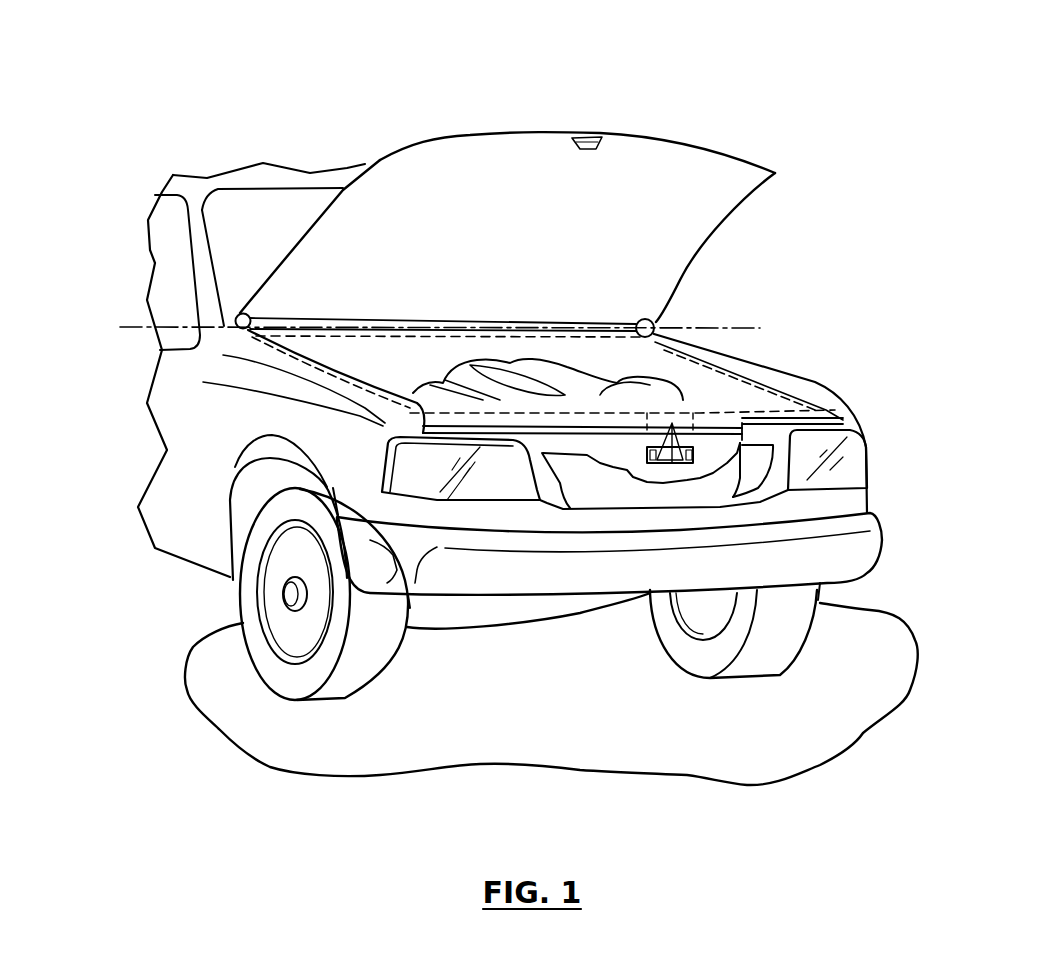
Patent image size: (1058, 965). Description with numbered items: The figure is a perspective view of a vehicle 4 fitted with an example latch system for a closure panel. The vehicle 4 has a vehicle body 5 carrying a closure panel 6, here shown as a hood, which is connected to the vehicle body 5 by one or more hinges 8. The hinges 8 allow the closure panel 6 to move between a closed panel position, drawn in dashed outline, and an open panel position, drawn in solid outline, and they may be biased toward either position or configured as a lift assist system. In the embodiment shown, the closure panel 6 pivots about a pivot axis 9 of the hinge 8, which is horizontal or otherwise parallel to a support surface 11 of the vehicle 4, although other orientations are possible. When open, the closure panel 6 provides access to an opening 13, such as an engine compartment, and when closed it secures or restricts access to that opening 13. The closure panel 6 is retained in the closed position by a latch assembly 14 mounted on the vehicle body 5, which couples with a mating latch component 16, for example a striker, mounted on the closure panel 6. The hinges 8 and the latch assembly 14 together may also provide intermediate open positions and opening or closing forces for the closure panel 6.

The vehicle 4 is at (293, 118).
The vehicle body 5 is at (200, 540).
The closure panel 6 is at (740, 155).
The hinge 8 is at (240, 316).
The pivot axis 9 is at (137, 325).
The support surface 11 is at (600, 727).
The opening 13 is at (668, 360).
The latch assembly 14 is at (705, 461).
The mating latch component 16 is at (572, 134).